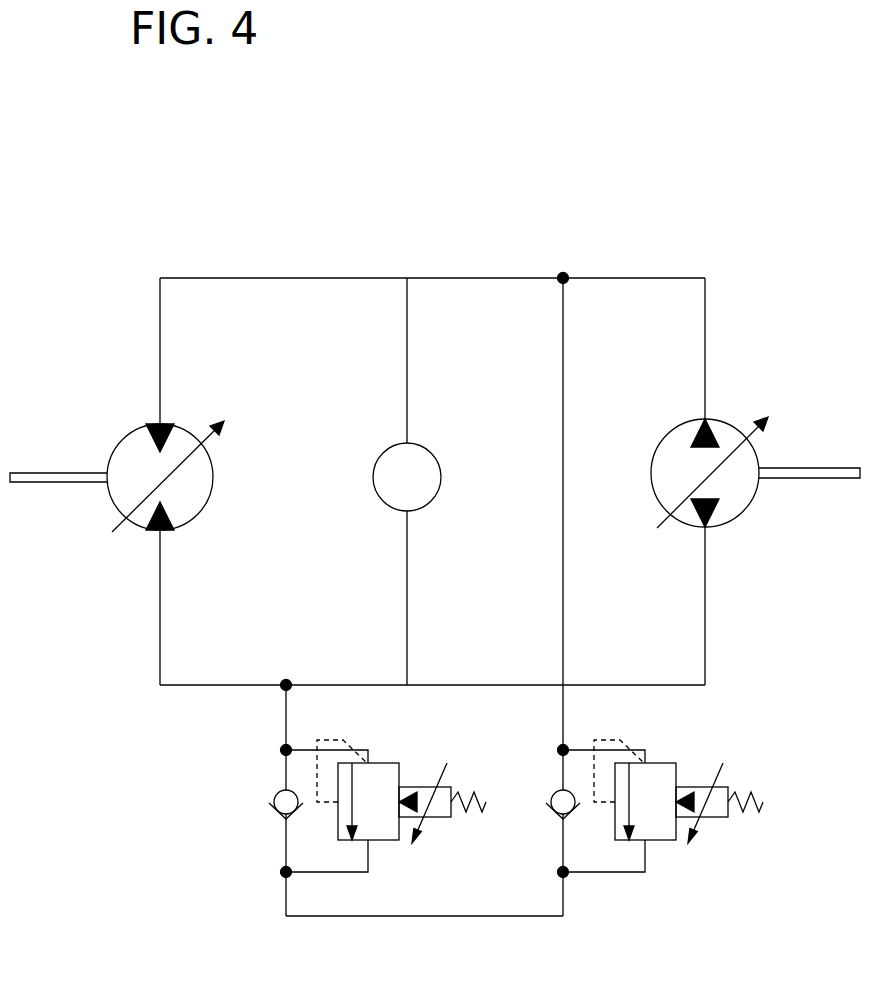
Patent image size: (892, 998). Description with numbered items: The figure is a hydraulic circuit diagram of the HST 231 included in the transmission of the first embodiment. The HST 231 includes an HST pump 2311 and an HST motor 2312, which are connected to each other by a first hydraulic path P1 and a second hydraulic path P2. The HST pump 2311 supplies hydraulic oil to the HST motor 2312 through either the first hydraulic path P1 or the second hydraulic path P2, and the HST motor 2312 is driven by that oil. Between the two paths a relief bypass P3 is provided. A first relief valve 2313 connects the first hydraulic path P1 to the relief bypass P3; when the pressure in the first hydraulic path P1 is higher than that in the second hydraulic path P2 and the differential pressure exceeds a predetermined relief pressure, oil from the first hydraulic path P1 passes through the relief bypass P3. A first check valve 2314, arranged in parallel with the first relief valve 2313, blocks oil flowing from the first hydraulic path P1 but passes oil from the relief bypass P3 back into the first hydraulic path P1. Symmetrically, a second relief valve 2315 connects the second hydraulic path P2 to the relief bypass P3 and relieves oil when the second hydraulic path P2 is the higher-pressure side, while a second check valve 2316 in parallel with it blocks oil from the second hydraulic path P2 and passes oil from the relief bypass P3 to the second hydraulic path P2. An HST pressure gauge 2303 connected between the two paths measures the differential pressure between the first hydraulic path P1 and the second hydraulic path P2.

The HST 231 is at (708, 108).
The HST pump 2311 is at (728, 428).
The HST motor 2312 is at (182, 430).
The HST pressure gauge 2303 is at (423, 443).
The first relief valve 2313 is at (663, 763).
The first check valve 2314 is at (555, 792).
The second relief valve 2315 is at (385, 763).
The second check valve 2316 is at (277, 792).
The first hydraulic path P1 is at (630, 278).
The second hydraulic path P2 is at (630, 685).
The relief bypass P3 is at (433, 916).